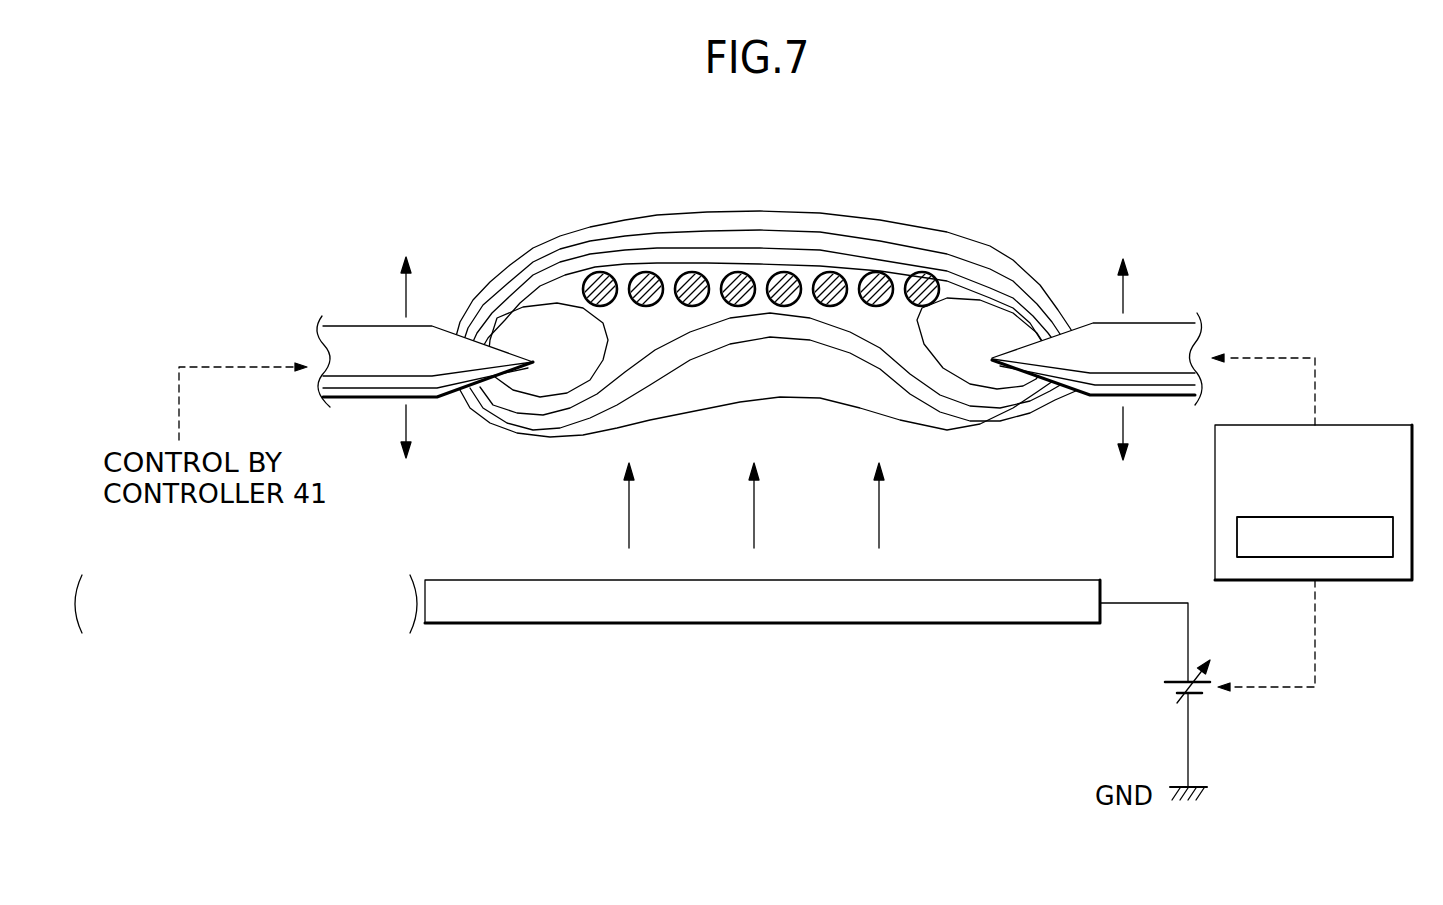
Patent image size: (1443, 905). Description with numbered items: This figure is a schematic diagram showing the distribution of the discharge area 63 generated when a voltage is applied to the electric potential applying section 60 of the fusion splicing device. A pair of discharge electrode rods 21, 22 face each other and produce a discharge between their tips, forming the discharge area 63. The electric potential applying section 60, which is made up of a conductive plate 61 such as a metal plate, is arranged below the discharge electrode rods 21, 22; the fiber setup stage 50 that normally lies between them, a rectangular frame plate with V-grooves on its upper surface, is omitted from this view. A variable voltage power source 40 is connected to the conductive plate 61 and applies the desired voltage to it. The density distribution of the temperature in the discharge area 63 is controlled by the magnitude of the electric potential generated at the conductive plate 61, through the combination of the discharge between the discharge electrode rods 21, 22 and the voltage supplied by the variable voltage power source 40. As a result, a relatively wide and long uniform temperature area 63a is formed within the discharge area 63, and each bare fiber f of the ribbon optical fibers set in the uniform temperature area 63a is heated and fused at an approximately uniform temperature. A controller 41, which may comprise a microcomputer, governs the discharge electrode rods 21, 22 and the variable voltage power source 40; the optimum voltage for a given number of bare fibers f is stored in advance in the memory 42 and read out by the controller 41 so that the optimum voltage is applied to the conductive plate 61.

The discharge electrode rod 21 is at (1162, 323).
The discharge electrode rod 22 is at (350, 326).
The variable voltage power source 40 is at (1160, 688).
The controller 41 is at (1287, 474).
The memory 42 is at (1237, 537).
The fiber setup stage 50 is at (246, 604).
The electric potential applying section 60 is at (762, 656).
The conductive plate 61 is at (672, 638).
The discharge area 63 is at (766, 296).
The uniform temperature area 63a is at (761, 240).
The bare fiber f is at (732, 287).